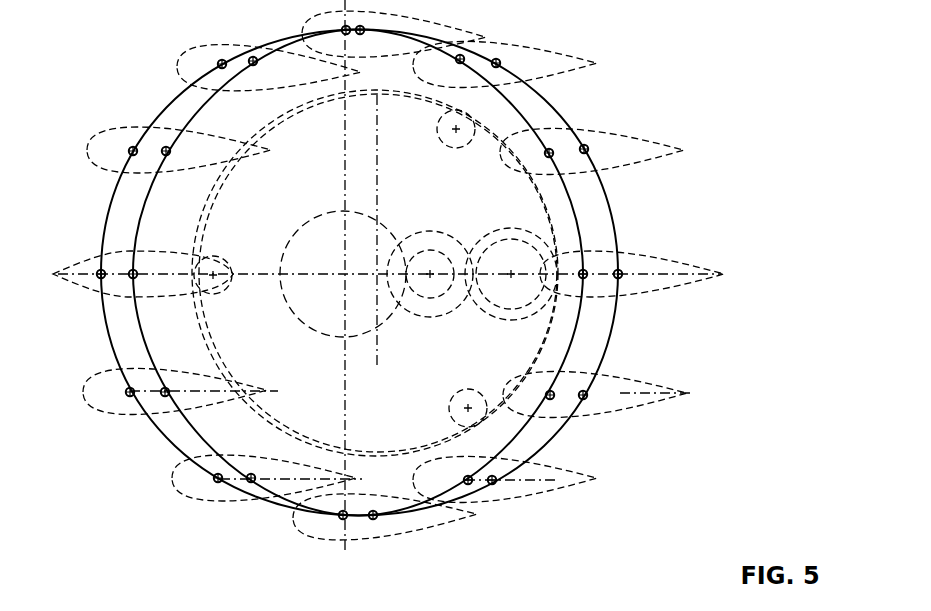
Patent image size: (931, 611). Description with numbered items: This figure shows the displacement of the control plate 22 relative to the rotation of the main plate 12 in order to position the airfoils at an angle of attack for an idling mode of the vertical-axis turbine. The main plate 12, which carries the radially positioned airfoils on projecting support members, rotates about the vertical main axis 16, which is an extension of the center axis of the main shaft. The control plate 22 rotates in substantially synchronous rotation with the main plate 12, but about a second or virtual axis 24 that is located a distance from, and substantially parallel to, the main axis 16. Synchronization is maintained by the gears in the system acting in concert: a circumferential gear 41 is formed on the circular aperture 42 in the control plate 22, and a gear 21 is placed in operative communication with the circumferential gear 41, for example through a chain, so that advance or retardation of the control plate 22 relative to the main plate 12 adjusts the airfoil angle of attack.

The main plate 12 is at (108, 233).
The control plate 22 is at (184, 244).
The main axis 16 is at (342, 272).
The virtual axis 24 is at (377, 272).
The gear 21 is at (428, 319).
The circumferential gear 41 is at (497, 319).
The circular aperture 42 is at (218, 363).